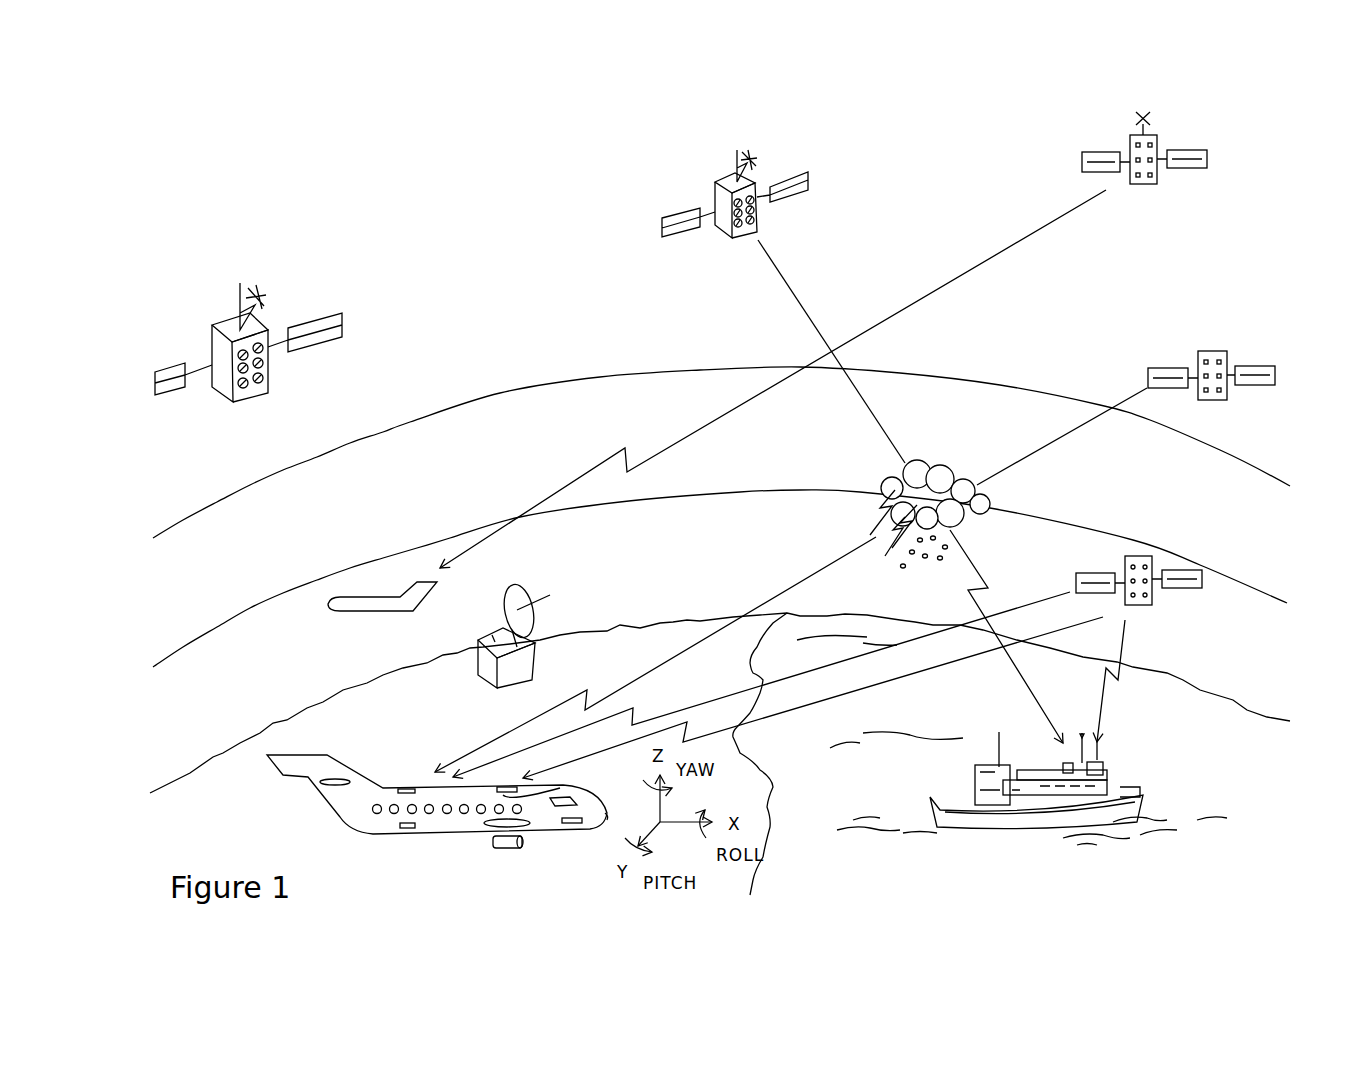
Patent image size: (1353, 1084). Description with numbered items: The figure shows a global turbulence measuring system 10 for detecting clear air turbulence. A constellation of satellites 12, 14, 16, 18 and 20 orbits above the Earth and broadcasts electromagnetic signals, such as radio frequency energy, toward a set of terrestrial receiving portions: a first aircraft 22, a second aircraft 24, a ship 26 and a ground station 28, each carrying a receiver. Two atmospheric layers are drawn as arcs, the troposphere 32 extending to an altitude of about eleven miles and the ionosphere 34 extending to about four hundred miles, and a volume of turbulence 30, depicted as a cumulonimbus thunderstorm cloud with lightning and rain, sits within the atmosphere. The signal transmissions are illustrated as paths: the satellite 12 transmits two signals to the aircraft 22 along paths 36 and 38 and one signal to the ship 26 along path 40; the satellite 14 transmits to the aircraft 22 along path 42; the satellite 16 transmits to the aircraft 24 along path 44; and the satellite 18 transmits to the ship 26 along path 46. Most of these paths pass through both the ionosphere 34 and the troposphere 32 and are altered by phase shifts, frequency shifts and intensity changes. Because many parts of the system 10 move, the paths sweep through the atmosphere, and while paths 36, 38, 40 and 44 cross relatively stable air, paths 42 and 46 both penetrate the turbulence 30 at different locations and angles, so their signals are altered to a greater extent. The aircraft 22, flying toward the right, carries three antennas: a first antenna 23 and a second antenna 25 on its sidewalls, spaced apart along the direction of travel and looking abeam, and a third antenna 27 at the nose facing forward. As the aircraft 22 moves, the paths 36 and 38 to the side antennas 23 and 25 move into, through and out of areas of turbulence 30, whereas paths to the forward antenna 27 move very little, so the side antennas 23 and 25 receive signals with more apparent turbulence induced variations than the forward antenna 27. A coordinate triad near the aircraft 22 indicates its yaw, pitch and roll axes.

The global turbulence measuring system 10 is at (397, 260).
The satellite 12 is at (1158, 607).
The satellite 14 is at (1225, 405).
The satellite 16 is at (1142, 186).
The satellite 18 is at (815, 178).
The satellite 20 is at (278, 388).
The aircraft 22 is at (273, 767).
The antenna 23 is at (400, 788).
The aircraft 24 is at (377, 612).
The antenna 25 is at (555, 788).
The ship 26 is at (1018, 828).
The antenna 27 is at (607, 817).
The ground station 28 is at (537, 662).
The turbulence 30 is at (885, 470).
The troposphere 32 is at (268, 651).
The ionosphere 34 is at (333, 511).
The signal path 36 is at (1027, 607).
The signal path 38 is at (925, 672).
The signal path 40 is at (1105, 700).
The signal path 42 is at (1000, 468).
The signal path 44 is at (935, 290).
The signal path 46 is at (790, 285).